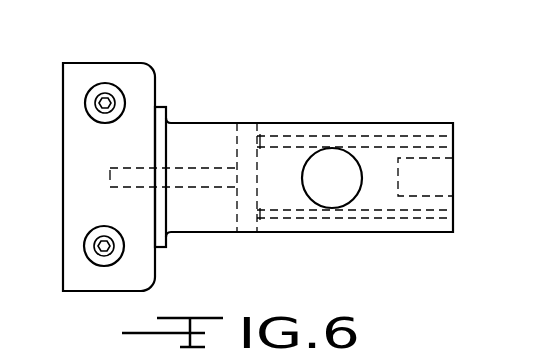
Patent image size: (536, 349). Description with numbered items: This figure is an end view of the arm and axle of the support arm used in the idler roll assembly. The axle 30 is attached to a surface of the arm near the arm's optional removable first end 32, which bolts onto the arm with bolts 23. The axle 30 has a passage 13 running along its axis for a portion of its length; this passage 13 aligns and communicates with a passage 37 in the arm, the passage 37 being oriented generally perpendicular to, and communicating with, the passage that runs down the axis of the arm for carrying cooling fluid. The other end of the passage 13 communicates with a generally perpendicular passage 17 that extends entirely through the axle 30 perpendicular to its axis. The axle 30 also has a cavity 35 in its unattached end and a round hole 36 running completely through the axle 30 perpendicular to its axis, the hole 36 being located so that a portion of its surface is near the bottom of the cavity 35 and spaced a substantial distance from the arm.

The passage 13 is at (197, 180).
The perpendicular passage 17 is at (247, 155).
The bolts 23 is at (88, 103).
The axle 30 is at (217, 122).
The first end 32 is at (125, 80).
The cavity 35 is at (435, 173).
The round hole 36 is at (335, 163).
The passage 37 is at (110, 175).